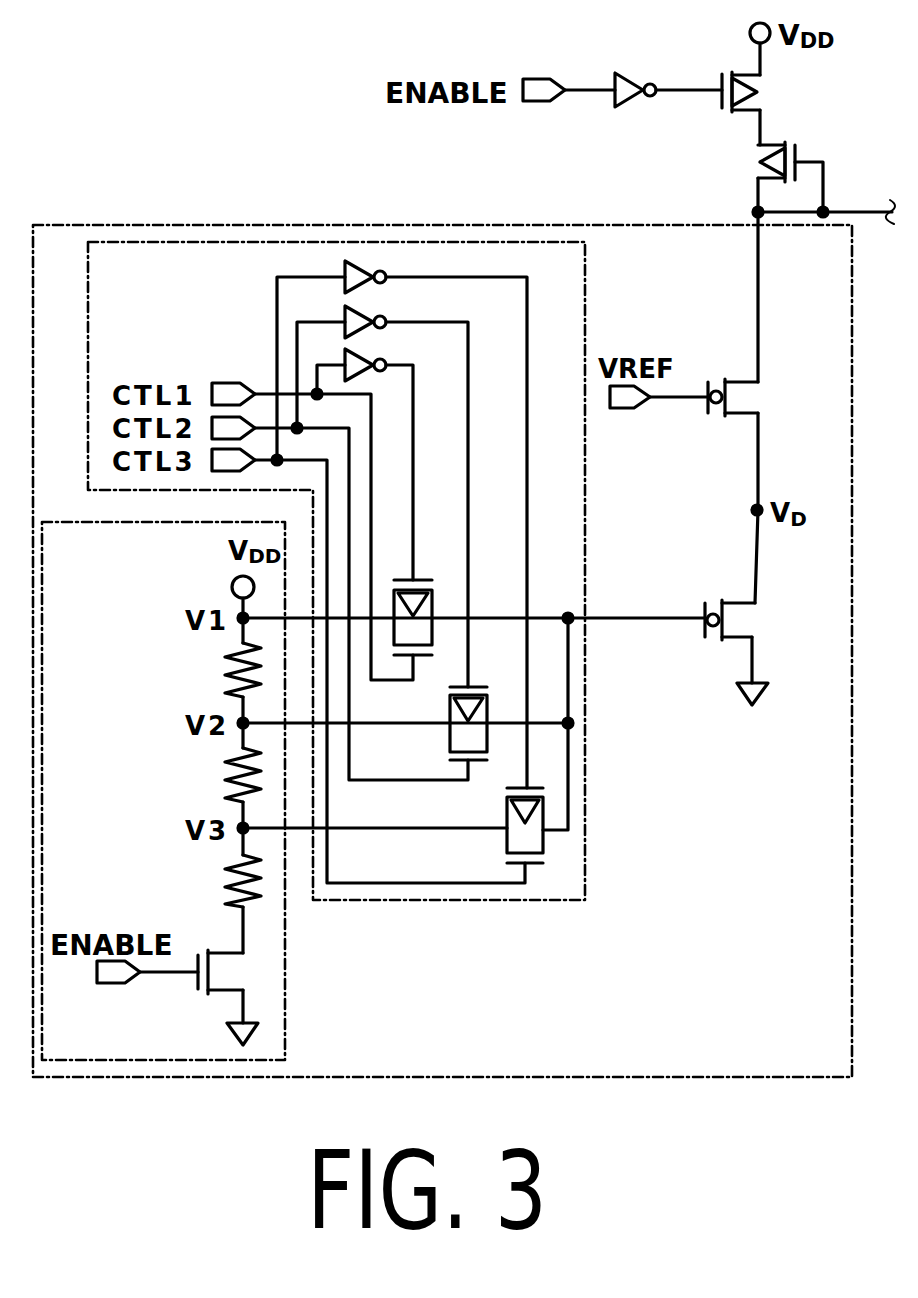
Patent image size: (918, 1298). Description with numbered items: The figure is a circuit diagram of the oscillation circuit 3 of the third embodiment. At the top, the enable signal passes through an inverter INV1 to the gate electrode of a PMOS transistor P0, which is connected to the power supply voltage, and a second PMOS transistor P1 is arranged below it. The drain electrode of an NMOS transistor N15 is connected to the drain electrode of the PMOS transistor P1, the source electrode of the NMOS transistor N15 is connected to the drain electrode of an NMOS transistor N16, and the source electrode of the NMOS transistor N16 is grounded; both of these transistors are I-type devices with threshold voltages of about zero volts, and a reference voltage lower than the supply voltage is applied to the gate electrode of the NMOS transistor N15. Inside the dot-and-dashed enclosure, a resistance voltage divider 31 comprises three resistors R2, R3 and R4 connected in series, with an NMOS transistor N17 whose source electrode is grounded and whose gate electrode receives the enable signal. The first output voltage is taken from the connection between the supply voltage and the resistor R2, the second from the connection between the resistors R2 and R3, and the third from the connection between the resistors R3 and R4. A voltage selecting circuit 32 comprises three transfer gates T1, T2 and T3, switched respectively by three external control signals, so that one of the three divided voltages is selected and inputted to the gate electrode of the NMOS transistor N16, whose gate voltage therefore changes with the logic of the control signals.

The oscillation circuit 3 is at (172, 225).
The resistance voltage divider 31 is at (286, 979).
The voltage selecting circuit 32 is at (584, 822).
The inverter INV1 is at (625, 73).
The PMOS transistor P0 is at (765, 92).
The PMOS transistor P1 is at (760, 163).
The NMOS transistor N15 is at (745, 398).
The NMOS transistor N16 is at (740, 621).
The NMOS transistor N17 is at (222, 995).
The transfer gate T1 is at (425, 578).
The transfer gate T2 is at (447, 728).
The transfer gate T3 is at (500, 838).
The resistor R2 is at (215, 668).
The resistor R3 is at (215, 776).
The resistor R4 is at (215, 878).